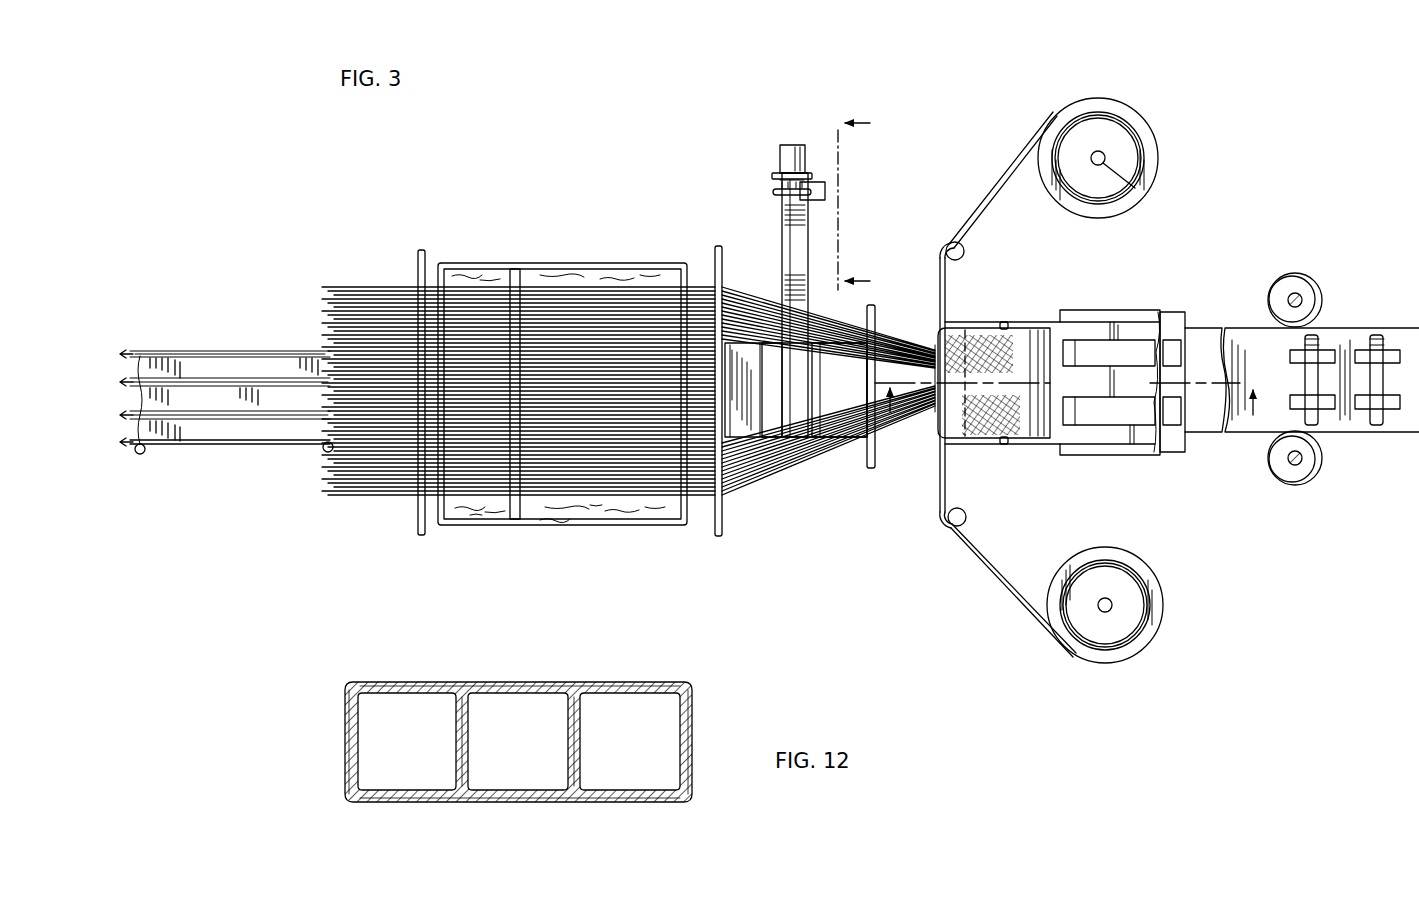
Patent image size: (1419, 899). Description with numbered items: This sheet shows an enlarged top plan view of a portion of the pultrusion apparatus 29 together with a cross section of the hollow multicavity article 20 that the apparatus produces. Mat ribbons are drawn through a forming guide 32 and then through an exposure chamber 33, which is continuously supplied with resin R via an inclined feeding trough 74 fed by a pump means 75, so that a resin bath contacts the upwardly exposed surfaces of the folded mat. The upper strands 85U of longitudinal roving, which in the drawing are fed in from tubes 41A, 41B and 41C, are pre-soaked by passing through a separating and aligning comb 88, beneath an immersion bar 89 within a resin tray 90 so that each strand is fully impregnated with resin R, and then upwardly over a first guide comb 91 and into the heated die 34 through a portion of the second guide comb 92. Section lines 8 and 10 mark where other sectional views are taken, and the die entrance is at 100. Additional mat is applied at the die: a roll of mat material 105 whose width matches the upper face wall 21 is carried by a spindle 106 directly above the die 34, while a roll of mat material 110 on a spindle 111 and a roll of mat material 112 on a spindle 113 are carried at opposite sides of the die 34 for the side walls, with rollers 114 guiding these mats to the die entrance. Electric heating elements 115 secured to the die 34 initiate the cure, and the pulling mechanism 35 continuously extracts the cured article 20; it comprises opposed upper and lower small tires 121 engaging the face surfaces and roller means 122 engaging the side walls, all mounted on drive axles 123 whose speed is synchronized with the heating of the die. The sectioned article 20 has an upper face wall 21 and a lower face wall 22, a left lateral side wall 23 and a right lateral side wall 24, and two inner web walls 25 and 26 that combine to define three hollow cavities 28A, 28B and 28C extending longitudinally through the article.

In FIG. 3, the upper strands 85U is at (375, 285).
In FIG. 3, the fiber feed tube 41A is at (183, 365).
In FIG. 3, the fiber feed tube 41B is at (282, 385).
In FIG. 3, the fiber feed tube 41C is at (205, 447).
In FIG. 3, the separating and aligning comb 88 is at (428, 262).
In FIG. 3, the immersion bar 89 is at (520, 268).
In FIG. 3, the resin tray 90 is at (640, 262).
In FIG. 3, the resin R is at (562, 517).
In FIG. 3, the first guide comb 91 is at (712, 258).
In FIG. 3, the apparatus 29 is at (632, 212).
In FIG. 3, the forming guide 32 is at (738, 450).
In FIG. 3, the exposure chamber 33 is at (855, 455).
In FIG. 3, the feeding trough 74 is at (778, 225).
In FIG. 3, the pump means 75 is at (776, 158).
In FIG. 3, the section line 8 is at (854, 203).
In FIG. 3, the second guide comb 92 is at (876, 316).
In FIG. 3, the section line 10 is at (1069, 387).
In FIG. 3, the forming die entrance 100 is at (935, 440).
In FIG. 3, the rollers 114 is at (966, 250).
In FIG. 3, the roll of mat material 110 is at (1140, 158).
In FIG. 3, the spindle 111 is at (1135, 188).
In FIG. 3, the roll of mat material 112 is at (1112, 562).
In FIG. 3, the spindle 113 is at (1113, 603).
In FIG. 3, the roll of mat material 105 is at (975, 338).
In FIG. 3, the spindle 106 is at (1004, 320).
In FIG. 3, the heated die 34 is at (1072, 448).
In FIG. 3, the heating elements 115 is at (1110, 312).
In FIG. 3, the hollow multicavity article 20 is at (1402, 436).
In FIG. 12, the hollow multicavity article 20 is at (618, 665).
In FIG. 3, the pulling mechanism 35 is at (1330, 318).
In FIG. 3, the roller means 122 is at (1292, 285).
In FIG. 3, the drive axles 123 is at (1300, 294).
In FIG. 3, the small tires 121 is at (1300, 350).
In FIG. 12, the upper face wall 21 is at (482, 684).
In FIG. 12, the lower face wall 22 is at (490, 800).
In FIG. 12, the left lateral side wall 23 is at (342, 740).
In FIG. 12, the right lateral side wall 24 is at (694, 733).
In FIG. 12, the web wall 25 is at (460, 723).
In FIG. 12, the web wall 26 is at (578, 715).
In FIG. 12, the hollow cavity 28A is at (401, 753).
In FIG. 12, the hollow cavity 28B is at (512, 745).
In FIG. 12, the hollow cavity 28C is at (627, 745).